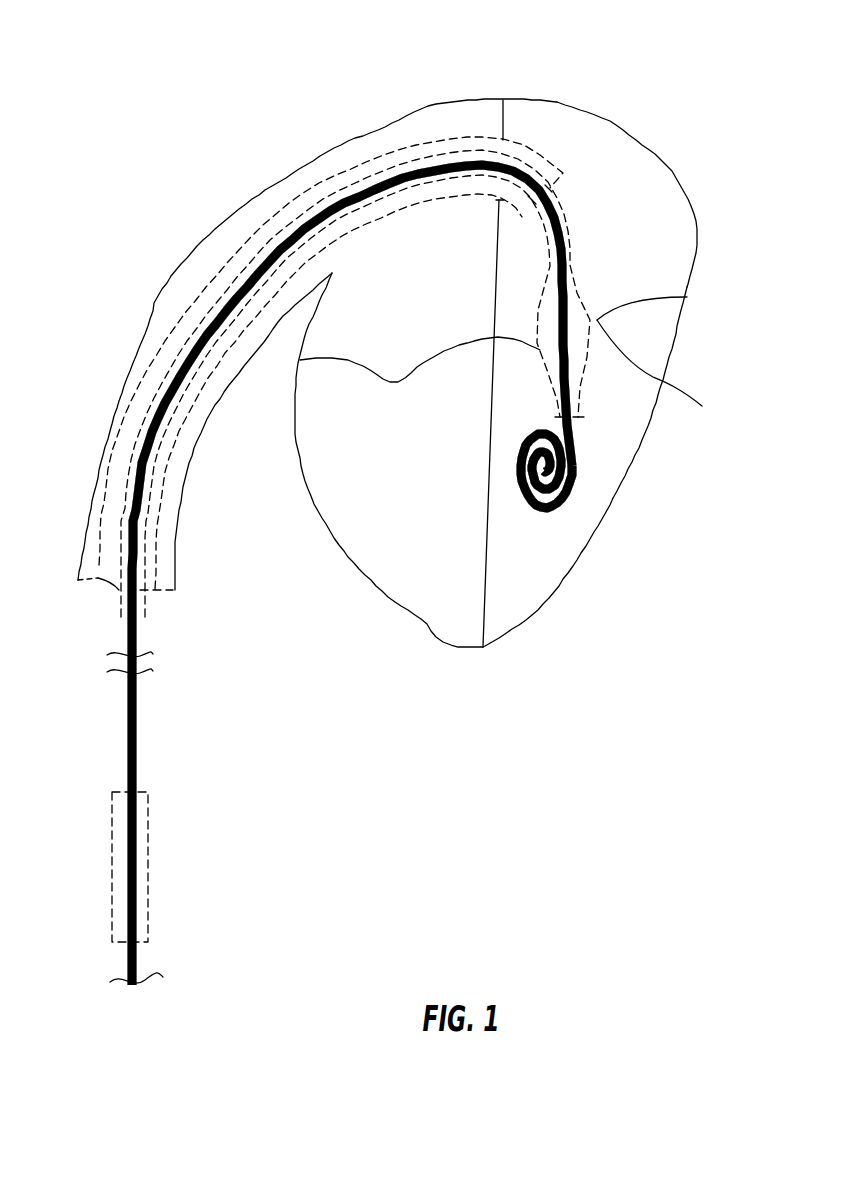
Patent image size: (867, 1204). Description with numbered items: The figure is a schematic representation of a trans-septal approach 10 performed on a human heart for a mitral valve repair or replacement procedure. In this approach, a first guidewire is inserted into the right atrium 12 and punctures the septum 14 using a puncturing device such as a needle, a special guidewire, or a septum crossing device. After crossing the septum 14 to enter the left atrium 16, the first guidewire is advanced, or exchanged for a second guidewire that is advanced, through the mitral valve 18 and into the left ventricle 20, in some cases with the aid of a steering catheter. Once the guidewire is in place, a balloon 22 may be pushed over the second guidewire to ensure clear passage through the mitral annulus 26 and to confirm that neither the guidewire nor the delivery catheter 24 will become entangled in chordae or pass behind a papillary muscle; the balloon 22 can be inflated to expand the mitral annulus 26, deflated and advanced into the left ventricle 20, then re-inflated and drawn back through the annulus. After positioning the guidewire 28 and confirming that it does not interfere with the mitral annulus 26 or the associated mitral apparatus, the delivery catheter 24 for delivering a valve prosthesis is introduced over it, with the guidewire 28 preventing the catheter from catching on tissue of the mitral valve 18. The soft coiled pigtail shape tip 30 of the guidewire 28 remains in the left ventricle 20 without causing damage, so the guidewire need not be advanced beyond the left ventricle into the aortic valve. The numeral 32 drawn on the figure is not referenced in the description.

The trans-septal approach 10 is at (160, 148).
The right atrium 12 is at (383, 130).
The septum 14 is at (503, 120).
The left atrium 16 is at (640, 142).
The mitral valve 18 is at (667, 297).
The left ventricle 20 is at (537, 602).
The balloon 22 is at (580, 403).
The delivery catheter 24 is at (150, 541).
The mitral annulus 26 is at (665, 377).
The guidewire 28 is at (130, 633).
The pigtail shape tip 30 is at (577, 480).
The heart (left ventricle region) 32 is at (372, 572).